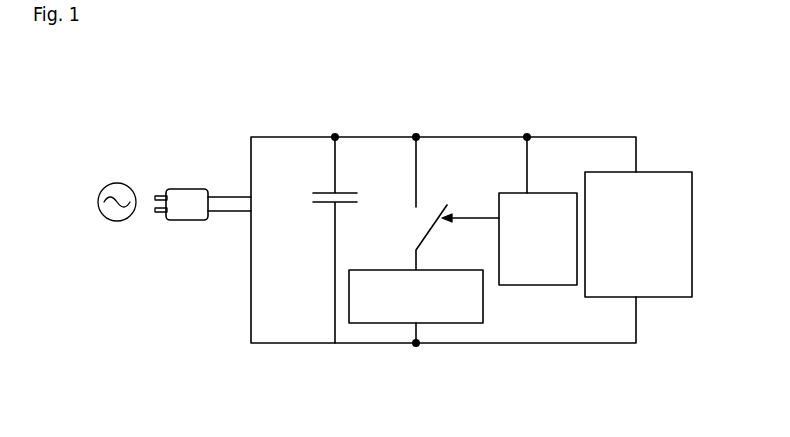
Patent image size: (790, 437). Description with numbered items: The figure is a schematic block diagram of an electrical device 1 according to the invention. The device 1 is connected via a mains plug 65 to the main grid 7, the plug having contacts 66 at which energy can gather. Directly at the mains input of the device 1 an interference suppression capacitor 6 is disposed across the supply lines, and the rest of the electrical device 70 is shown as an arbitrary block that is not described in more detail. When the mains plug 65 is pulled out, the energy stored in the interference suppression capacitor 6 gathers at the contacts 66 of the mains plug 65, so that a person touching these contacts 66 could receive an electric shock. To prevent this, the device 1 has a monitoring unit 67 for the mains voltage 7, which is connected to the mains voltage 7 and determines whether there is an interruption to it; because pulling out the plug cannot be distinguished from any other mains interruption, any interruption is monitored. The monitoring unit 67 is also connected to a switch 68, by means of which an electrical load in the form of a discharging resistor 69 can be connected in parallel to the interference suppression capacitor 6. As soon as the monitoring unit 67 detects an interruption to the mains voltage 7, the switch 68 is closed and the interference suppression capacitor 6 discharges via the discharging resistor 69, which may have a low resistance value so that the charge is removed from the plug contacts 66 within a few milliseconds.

The electrical device 1 is at (262, 85).
The main grid 7 is at (110, 187).
The contacts 66 is at (157, 208).
The mains plug 65 is at (187, 203).
The interference suppression capacitor 6 is at (322, 192).
The switch 68 is at (425, 215).
The monitoring unit 67 is at (513, 203).
The discharging resistor 69 is at (465, 305).
The rest of the electrical device 70 is at (615, 282).